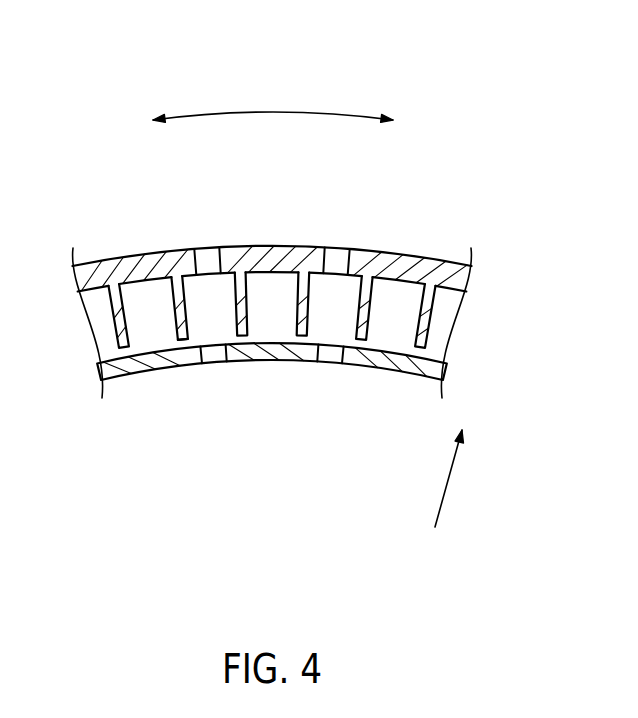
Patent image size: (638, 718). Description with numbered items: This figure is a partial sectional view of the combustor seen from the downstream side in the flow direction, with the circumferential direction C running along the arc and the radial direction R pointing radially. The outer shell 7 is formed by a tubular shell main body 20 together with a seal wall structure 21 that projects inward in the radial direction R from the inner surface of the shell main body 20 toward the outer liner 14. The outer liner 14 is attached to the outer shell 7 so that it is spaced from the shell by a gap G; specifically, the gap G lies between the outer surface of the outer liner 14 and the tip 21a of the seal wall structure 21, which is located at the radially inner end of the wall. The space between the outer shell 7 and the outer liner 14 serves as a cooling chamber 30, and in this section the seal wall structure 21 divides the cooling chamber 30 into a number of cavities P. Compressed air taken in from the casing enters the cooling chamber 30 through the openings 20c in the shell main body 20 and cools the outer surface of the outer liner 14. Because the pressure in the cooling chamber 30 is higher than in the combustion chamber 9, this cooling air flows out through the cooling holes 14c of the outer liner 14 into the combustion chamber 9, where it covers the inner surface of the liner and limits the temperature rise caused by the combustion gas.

The outer shell 7 is at (533, 160).
The shell main body 20 is at (403, 248).
The openings 20c is at (339, 262).
The seal wall structure 21 is at (433, 301).
The tip 21a is at (188, 342).
The cavities P is at (200, 305).
The cooling chamber 30 is at (102, 333).
The gap G is at (132, 350).
The combustion chamber 9 is at (223, 471).
The outer liner 14 is at (400, 372).
The cooling holes 14c is at (332, 362).
The circumferential direction C is at (273, 112).
The radial direction R is at (477, 478).